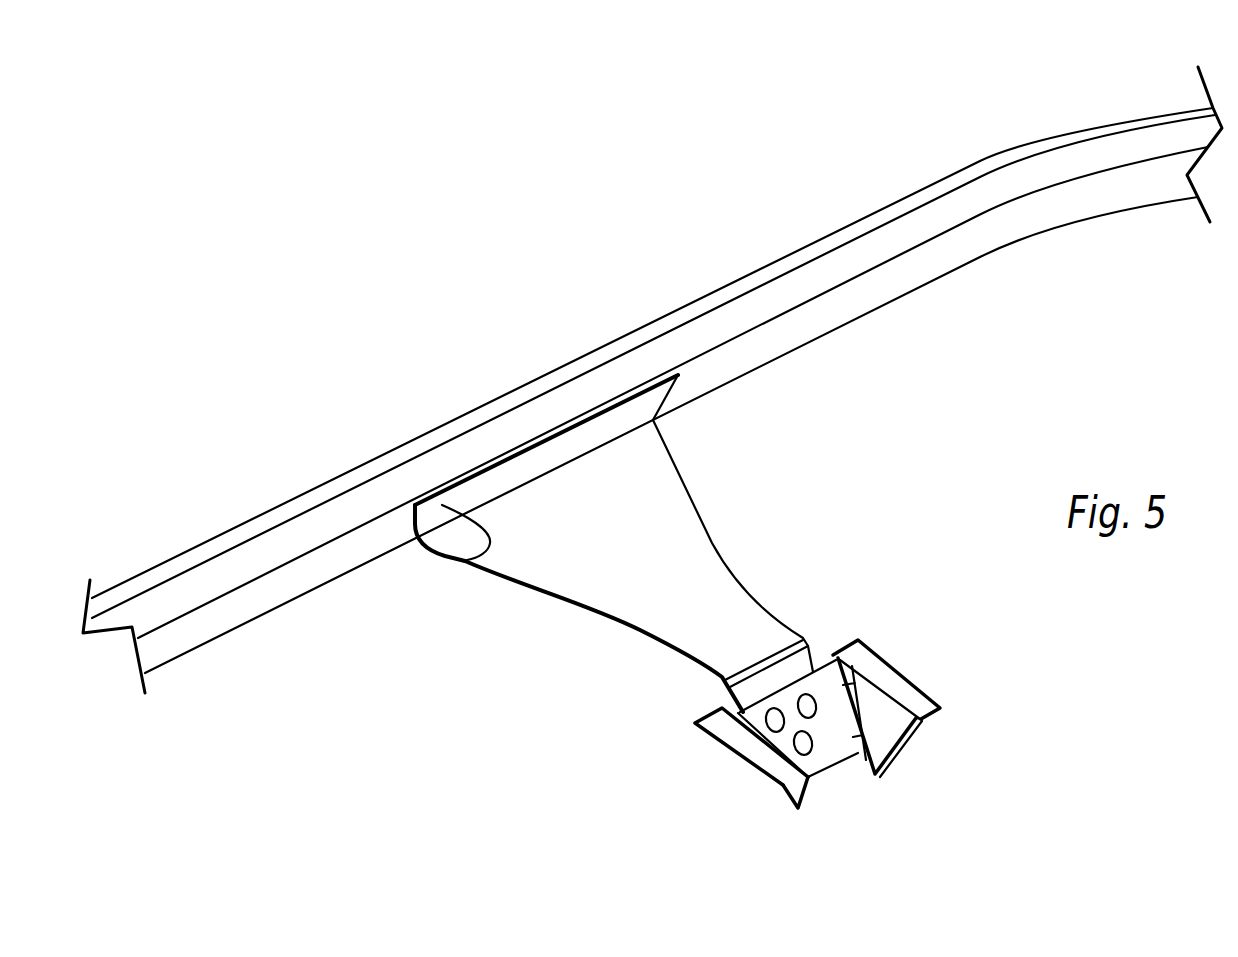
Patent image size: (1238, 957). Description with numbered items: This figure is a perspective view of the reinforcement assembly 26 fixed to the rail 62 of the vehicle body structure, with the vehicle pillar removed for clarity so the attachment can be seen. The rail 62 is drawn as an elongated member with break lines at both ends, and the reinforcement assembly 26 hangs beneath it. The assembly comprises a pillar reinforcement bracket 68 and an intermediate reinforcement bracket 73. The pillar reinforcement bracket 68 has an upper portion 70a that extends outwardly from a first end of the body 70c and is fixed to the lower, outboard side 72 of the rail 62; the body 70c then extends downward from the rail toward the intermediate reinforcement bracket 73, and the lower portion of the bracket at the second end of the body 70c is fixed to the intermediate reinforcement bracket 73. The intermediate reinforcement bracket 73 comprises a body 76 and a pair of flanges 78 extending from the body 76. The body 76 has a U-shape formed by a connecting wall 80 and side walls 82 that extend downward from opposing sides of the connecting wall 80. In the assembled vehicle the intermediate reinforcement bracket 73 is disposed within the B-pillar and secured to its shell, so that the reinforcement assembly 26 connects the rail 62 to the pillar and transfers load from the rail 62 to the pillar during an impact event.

The reinforcement assembly 26 is at (520, 662).
The rail 62 is at (343, 510).
The pillar reinforcement bracket 68 is at (647, 673).
The upper portion 70a is at (463, 560).
The body 70c is at (697, 545).
The lower, outboard side 72 is at (830, 317).
The intermediate reinforcement bracket 73 is at (685, 737).
The body 76 is at (892, 767).
The flanges 78 is at (745, 743).
The connecting wall 80 is at (825, 743).
The side walls 82 is at (798, 802).